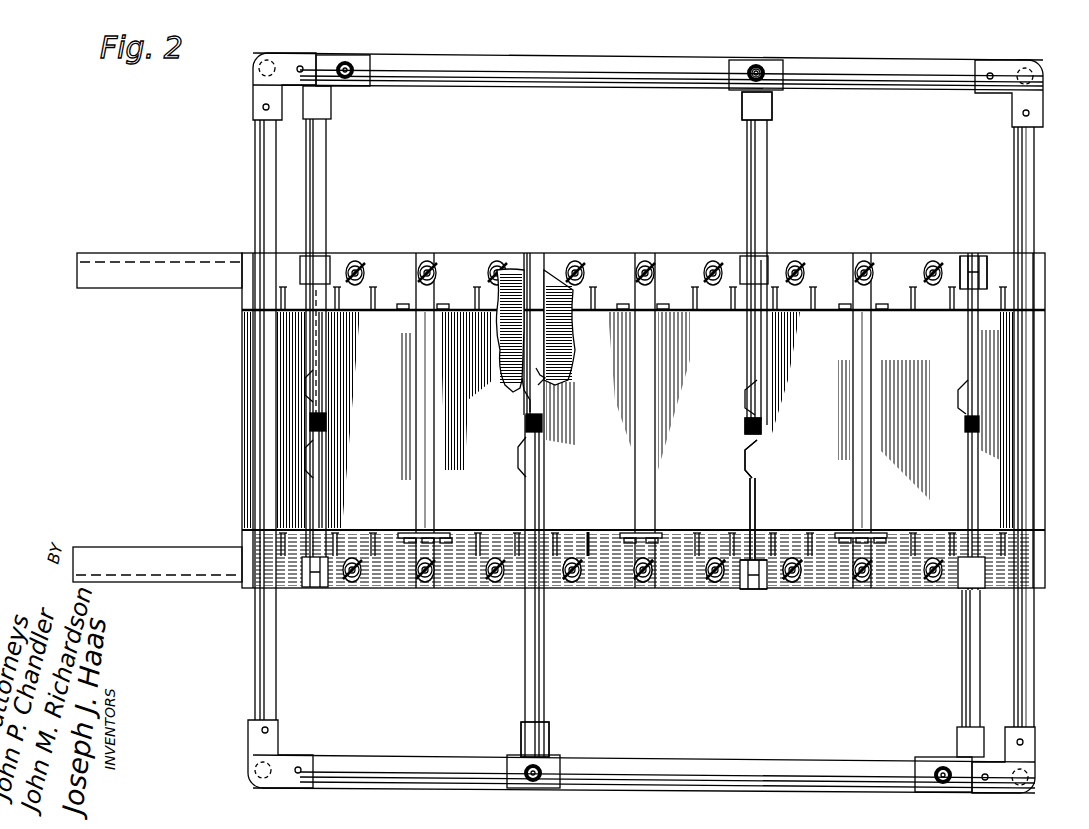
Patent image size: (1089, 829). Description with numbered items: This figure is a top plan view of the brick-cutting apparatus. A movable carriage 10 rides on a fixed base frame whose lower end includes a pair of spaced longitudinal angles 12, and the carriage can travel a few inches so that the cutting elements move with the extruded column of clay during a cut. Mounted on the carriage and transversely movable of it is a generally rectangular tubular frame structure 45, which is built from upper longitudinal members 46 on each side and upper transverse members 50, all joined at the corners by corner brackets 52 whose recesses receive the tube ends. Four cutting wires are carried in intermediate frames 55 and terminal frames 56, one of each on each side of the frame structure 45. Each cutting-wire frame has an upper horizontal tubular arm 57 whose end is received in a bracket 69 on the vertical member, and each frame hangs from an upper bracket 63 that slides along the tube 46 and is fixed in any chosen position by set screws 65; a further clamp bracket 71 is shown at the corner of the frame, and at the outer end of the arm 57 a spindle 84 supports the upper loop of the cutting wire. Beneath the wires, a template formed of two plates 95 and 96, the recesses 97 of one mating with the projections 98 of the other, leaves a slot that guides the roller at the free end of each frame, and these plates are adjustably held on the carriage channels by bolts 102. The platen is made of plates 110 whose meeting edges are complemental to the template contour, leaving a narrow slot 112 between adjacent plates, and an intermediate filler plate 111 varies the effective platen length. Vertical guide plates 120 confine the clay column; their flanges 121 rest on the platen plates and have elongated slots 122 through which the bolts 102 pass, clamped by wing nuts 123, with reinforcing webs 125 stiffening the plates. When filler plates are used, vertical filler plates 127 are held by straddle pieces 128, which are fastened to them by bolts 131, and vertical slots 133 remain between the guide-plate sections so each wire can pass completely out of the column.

The movable frame or carriage 10 is at (643, 405).
The longitudinally-disposed angles 12 is at (204, 547).
The frame structure 45 is at (1043, 170).
The upper longitudinal members 46 is at (700, 88).
The upper transverse members 50 is at (255, 690).
The corner brackets 52 is at (253, 72).
The intermediate frames 55 is at (776, 237).
The terminal frames 56 is at (338, 166).
The upper horizontal tubular arms 57 is at (768, 183).
The upper bracket 63 is at (780, 60).
The set screws 65 is at (756, 66).
The bracket 69 is at (773, 112).
The clamp block 71 is at (362, 86).
The spindle 84 is at (760, 428).
The template plate 95 is at (510, 330).
The template plate 96 is at (559, 327).
The recesses 97 is at (522, 385).
The projections 98 is at (538, 373).
The bolts 102 is at (780, 590).
The platen plates 110 is at (935, 330).
The filler plate 111 is at (430, 492).
The slot 112 is at (757, 478).
The vertical guide plates 120 is at (590, 532).
The flanges 121 is at (626, 588).
The elongated slots 122 is at (715, 588).
The wing nuts 123 is at (803, 575).
The reinforcing webs 125 is at (593, 560).
The vertical filler plates 127 is at (425, 530).
The straddle pieces 128 is at (418, 542).
The bolts 131 is at (652, 535).
The vertical slots 133 is at (757, 530).